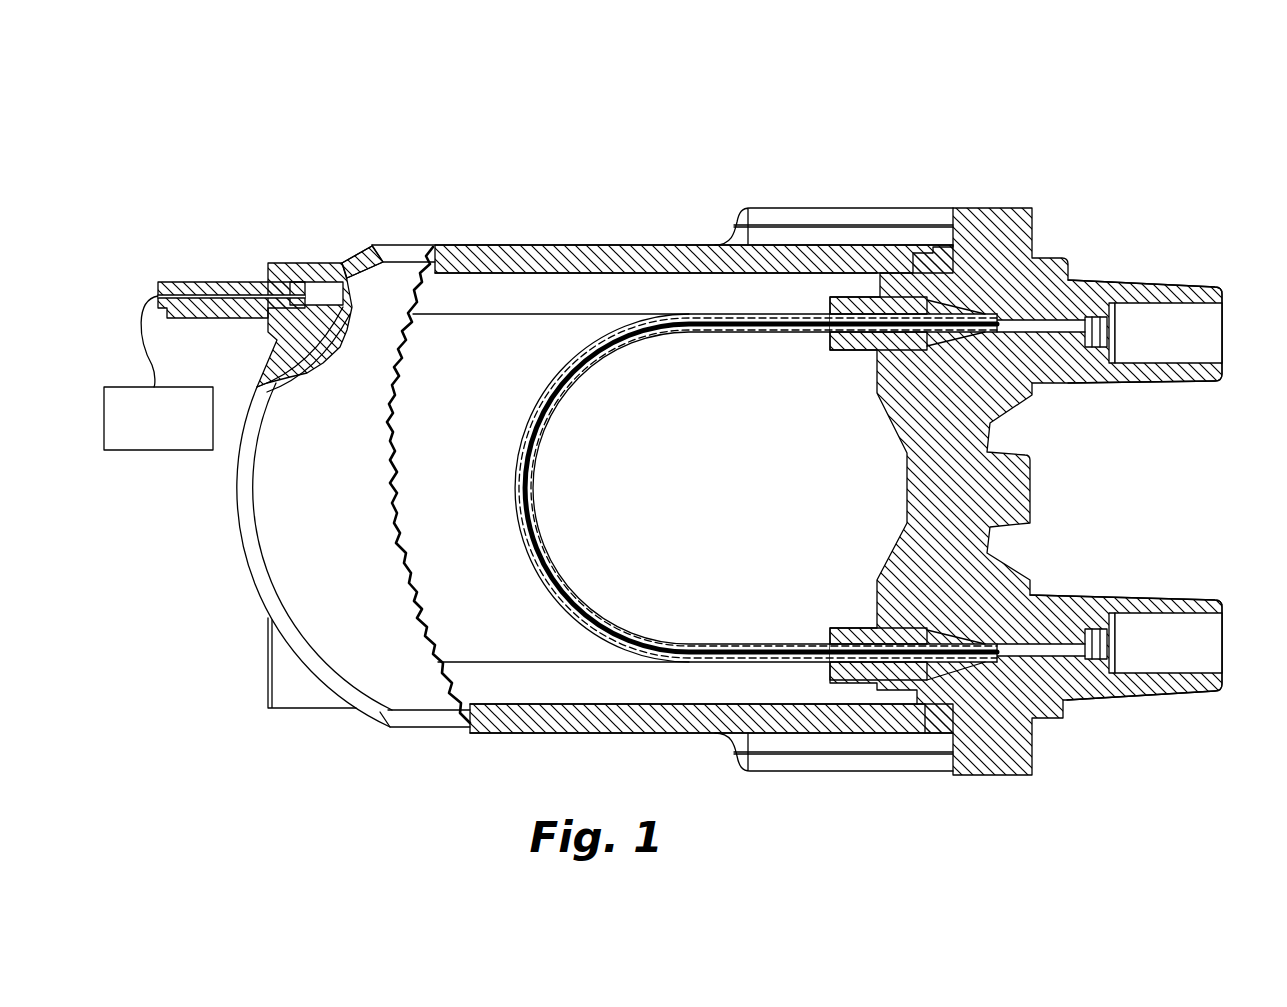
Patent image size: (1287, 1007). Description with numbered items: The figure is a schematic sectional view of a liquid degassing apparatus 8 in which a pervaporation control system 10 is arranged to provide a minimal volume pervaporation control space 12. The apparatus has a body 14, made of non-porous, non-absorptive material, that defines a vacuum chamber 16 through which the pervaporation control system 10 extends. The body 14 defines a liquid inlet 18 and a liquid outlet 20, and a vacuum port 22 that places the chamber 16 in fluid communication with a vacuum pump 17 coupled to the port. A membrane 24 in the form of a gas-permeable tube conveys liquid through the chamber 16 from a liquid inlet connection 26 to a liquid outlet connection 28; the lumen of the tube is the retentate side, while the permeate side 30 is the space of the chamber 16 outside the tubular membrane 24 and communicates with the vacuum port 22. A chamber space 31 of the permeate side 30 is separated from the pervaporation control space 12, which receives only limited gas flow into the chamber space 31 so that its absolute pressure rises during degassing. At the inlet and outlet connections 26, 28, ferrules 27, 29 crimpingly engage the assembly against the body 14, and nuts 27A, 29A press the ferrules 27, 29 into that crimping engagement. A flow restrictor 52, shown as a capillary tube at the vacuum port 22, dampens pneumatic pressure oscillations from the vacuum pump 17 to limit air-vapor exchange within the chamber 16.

The liquid degassing apparatus 8 is at (1095, 122).
The pervaporation control system 10 is at (553, 450).
The pervaporation control space 12 is at (557, 390).
The body 14 is at (668, 243).
The chamber 16 is at (751, 500).
The vacuum pump 17 is at (196, 387).
The liquid inlet 18 is at (1218, 665).
The liquid outlet 20 is at (1218, 317).
The vacuum port 22 is at (158, 296).
The membrane 24 is at (532, 538).
The liquid inlet connection 26 is at (997, 666).
The ferrule 27 is at (962, 688).
The nut 27A is at (847, 690).
The liquid outlet connection 28 is at (997, 313).
The ferrule 29 is at (967, 307).
The nut 29A is at (893, 303).
The permeate side 30 is at (466, 506).
The chamber space 31 is at (498, 330).
The flow restrictor 52 is at (210, 285).